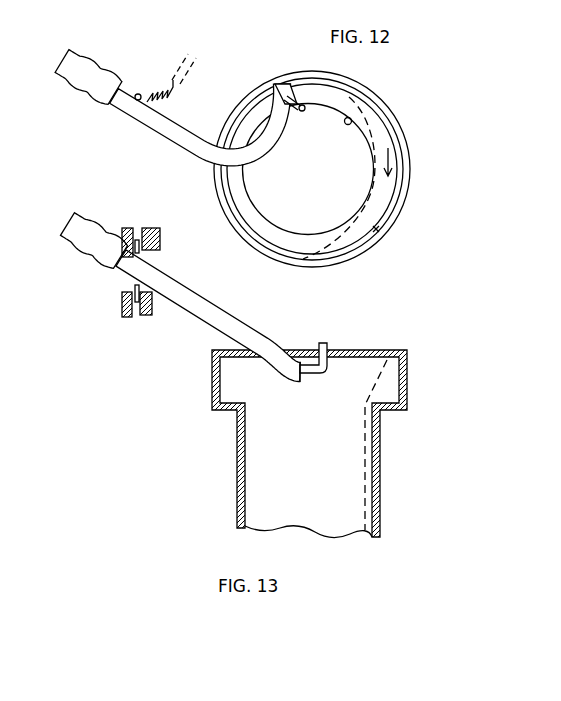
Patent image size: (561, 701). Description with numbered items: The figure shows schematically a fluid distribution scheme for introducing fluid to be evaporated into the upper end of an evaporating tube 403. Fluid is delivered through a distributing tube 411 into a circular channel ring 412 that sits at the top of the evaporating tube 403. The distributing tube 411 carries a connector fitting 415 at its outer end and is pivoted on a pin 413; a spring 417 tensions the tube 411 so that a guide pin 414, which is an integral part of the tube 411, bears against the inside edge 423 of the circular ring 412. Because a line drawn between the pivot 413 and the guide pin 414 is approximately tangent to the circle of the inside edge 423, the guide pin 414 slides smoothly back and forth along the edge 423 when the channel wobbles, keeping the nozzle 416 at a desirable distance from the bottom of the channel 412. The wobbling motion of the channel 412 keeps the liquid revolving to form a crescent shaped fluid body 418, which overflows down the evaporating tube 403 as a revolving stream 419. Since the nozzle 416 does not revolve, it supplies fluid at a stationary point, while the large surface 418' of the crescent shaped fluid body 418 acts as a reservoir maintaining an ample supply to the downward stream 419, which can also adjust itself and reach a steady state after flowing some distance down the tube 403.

In FIG. 12, the evaporating tube 403 is at (352, 119).
In FIG. 13, the evaporating tube 403 is at (383, 494).
In FIG. 12, the distributing tube 411 is at (254, 162).
In FIG. 13, the distributing tube 411 is at (235, 316).
In FIG. 12, the circular channel ring 412 is at (341, 74).
In FIG. 13, the circular channel ring 412 is at (212, 376).
In FIG. 12, the pin 413 is at (140, 94).
In FIG. 13, the pin 413 is at (143, 255).
In FIG. 12, the guide pin 414 is at (301, 112).
In FIG. 13, the guide pin 414 is at (330, 347).
In FIG. 12, the hose connector 415 is at (84, 50).
In FIG. 13, the hose connector 415 is at (84, 220).
In FIG. 12, the nozzle 416 is at (272, 86).
In FIG. 12, the spring 417 is at (170, 99).
In FIG. 12, the crescent shaped fluid body 418 is at (403, 234).
In FIG. 13, the crescent shaped fluid body 418 is at (422, 389).
In FIG. 13, the large surface of the crescent shaped fluid body 418' is at (429, 365).
In FIG. 12, the revolving stream 419 is at (372, 172).
In FIG. 13, the revolving stream 419 is at (365, 455).
In FIG. 13, the inside edge 423 is at (361, 364).